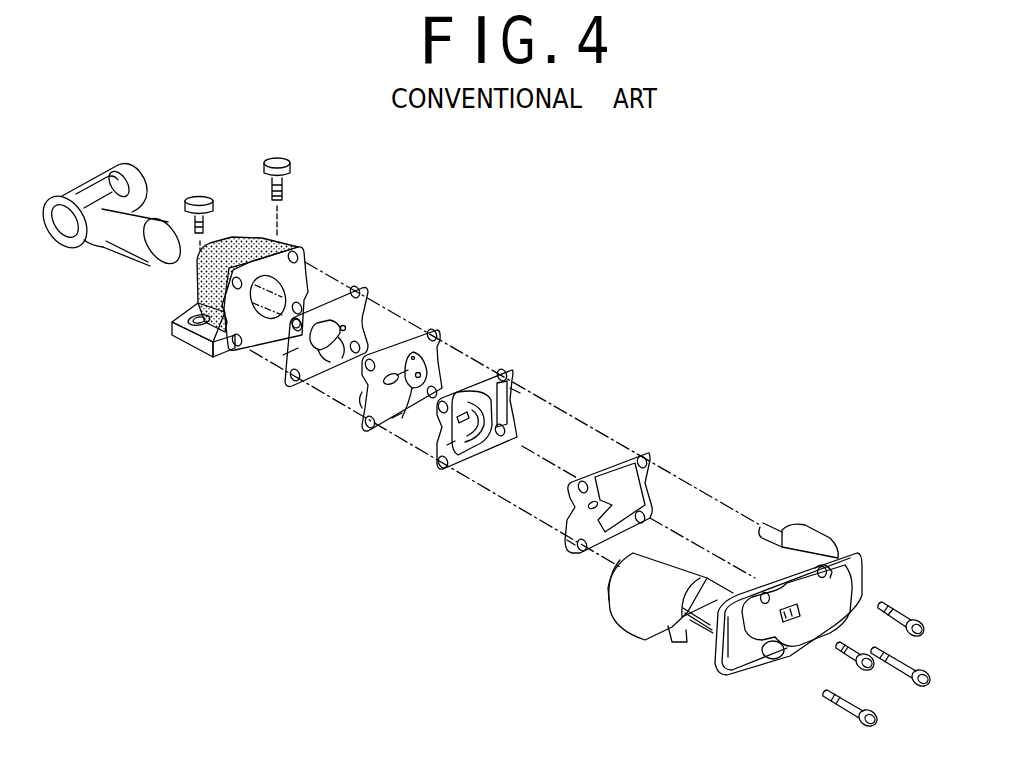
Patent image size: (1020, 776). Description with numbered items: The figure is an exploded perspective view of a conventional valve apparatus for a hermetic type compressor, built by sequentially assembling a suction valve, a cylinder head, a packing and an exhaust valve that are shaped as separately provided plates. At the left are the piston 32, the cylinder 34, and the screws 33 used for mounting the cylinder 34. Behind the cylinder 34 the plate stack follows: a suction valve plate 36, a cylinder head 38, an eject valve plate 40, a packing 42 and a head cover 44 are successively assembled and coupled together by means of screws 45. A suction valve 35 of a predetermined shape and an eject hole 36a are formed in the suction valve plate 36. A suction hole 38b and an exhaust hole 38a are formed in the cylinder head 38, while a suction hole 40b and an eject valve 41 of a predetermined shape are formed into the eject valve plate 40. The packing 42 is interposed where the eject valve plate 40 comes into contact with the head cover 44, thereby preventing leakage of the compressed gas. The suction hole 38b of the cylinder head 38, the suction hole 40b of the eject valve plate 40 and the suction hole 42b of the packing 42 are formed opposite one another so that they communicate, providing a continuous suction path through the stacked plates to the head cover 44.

The piston 32 is at (129, 252).
The screws 33 is at (287, 162).
The cylinder 34 is at (290, 240).
The suction valve 35 is at (277, 357).
The suction valve plate 36 is at (364, 283).
The eject hole 36a is at (340, 375).
The cylinder head 38 is at (440, 327).
The exhaust hole 38a is at (393, 432).
The suction hole 38b is at (350, 393).
The eject valve plate 40 is at (507, 370).
The suction hole 40b is at (432, 443).
The eject valve 41 is at (525, 390).
The packing 42 is at (648, 452).
The suction hole 42b is at (563, 523).
The head cover 44 is at (832, 553).
The screws 45 is at (847, 705).